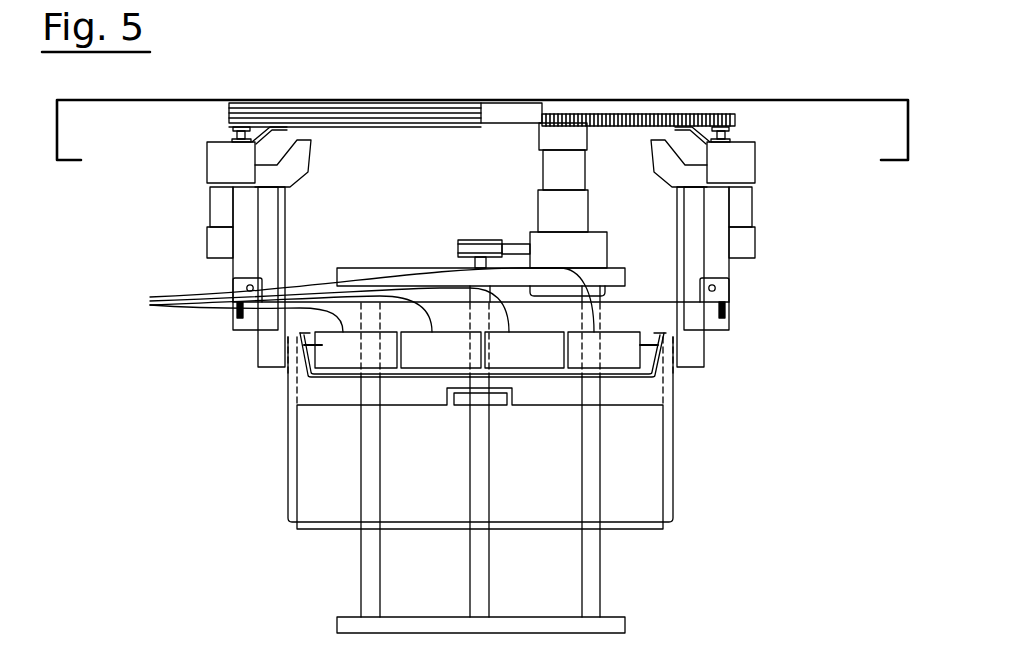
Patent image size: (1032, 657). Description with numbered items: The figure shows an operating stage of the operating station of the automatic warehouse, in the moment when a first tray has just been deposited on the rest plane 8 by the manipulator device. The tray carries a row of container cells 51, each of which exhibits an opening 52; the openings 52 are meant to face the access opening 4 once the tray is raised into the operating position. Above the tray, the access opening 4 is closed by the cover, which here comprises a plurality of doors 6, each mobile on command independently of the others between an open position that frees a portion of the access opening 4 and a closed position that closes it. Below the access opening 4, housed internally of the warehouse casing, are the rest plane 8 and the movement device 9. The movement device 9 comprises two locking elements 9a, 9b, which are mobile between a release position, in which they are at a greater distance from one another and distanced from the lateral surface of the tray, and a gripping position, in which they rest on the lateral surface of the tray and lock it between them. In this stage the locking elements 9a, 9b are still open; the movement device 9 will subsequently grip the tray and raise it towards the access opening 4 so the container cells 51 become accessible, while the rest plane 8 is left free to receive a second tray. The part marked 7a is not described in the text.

The access opening 4 is at (412, 146).
The doors 6 is at (547, 108).
The tray 7a is at (621, 383).
The rest plane 8 is at (677, 355).
The movement device 9 is at (233, 206).
The locking element 9a is at (302, 146).
The locking element 9b is at (659, 142).
The container cell 51 is at (368, 362).
The opening 52 is at (352, 300).